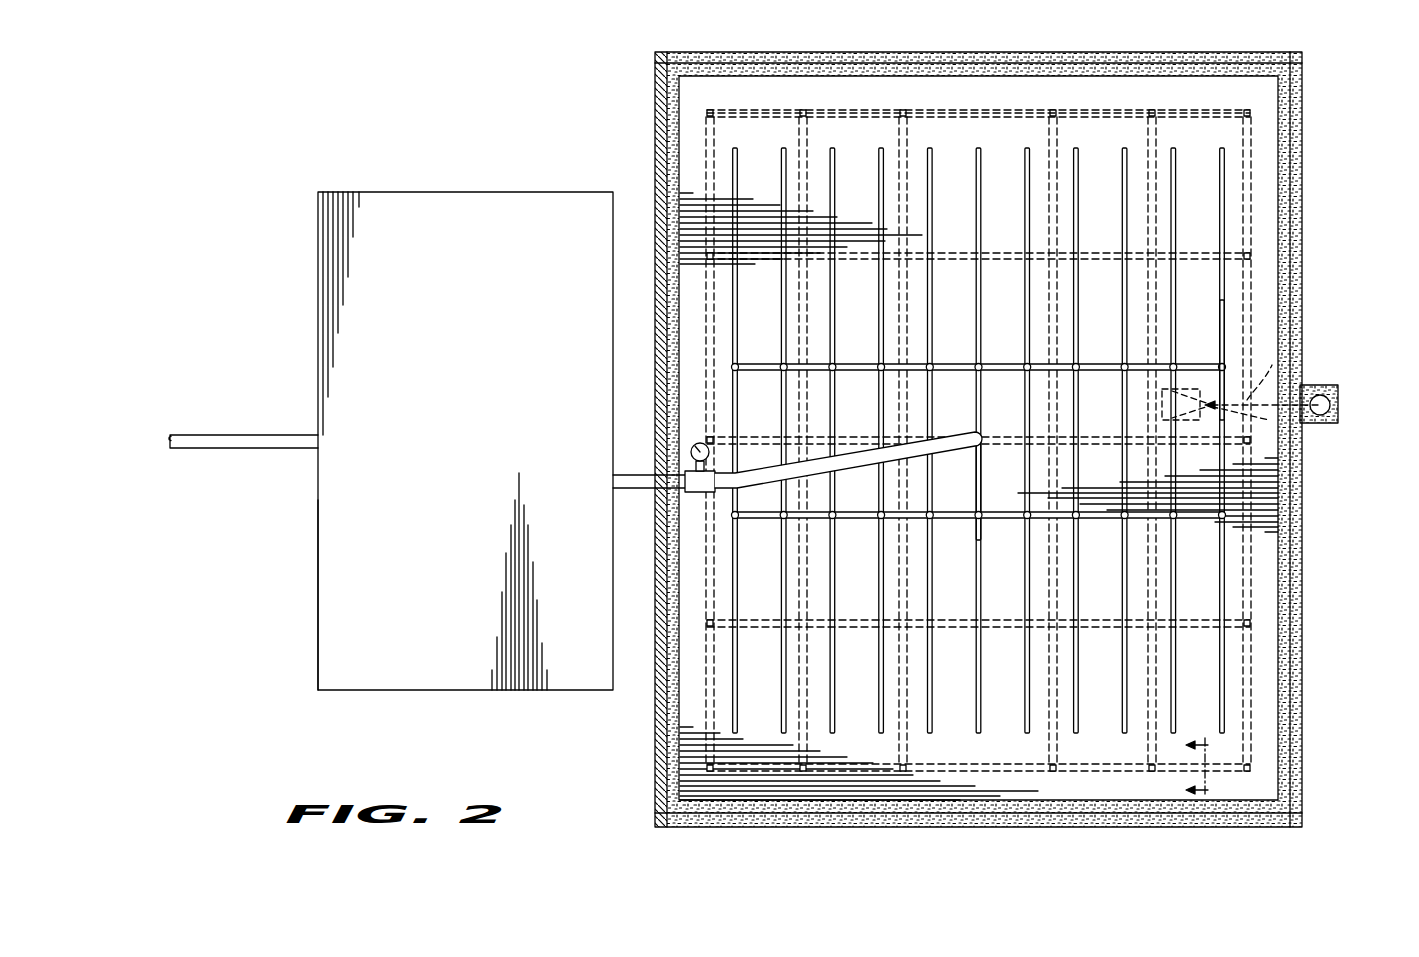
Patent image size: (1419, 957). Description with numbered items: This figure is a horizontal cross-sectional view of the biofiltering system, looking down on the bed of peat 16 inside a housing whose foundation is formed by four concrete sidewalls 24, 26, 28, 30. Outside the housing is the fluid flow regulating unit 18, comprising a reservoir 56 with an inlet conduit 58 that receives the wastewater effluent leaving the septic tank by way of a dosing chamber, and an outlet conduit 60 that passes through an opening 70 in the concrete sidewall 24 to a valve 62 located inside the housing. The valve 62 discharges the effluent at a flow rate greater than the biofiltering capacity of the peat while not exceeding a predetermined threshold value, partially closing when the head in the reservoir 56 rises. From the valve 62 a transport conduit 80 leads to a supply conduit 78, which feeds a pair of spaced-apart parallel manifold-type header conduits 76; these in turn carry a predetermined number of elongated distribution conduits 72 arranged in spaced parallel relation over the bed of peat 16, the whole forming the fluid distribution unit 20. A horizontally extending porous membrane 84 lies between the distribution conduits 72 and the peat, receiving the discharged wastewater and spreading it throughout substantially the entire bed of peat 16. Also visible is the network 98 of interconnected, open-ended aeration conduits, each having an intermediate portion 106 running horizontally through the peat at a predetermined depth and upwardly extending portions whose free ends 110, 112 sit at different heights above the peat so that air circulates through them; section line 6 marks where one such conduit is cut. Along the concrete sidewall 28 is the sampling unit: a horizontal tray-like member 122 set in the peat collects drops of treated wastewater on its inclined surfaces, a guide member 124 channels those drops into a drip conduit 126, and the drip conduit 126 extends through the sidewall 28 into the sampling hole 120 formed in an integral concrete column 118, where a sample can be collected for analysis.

The bed of peat 16 is at (982, 440).
The fluid flow regulating unit 18 is at (455, 165).
The fluid distribution unit 20 is at (1244, 340).
The concrete sidewall 24 is at (660, 751).
The concrete sidewall 26 is at (968, 63).
The concrete sidewall 28 is at (1298, 271).
The concrete sidewall 30 is at (866, 827).
The reservoir 56 is at (390, 532).
The inlet conduit 58 is at (262, 437).
The outlet conduit 60 is at (630, 474).
The valve 62 is at (700, 492).
The opening 70 is at (663, 485).
The distribution conduits 72 is at (1123, 224).
The header conduits 76 is at (853, 354).
The supply conduit 78 is at (982, 476).
The transport conduit 80 is at (862, 468).
The porous membrane 84 is at (757, 88).
The network of aeration conduits 98 is at (1030, 93).
The intermediate portion 106 is at (707, 165).
The free end 110 is at (706, 110).
The free end 112 is at (1252, 257).
The column 118 is at (1330, 390).
The sampling hole 120 is at (1330, 405).
The tray-like member 122 is at (1187, 388).
The guide member 124 is at (1270, 420).
The drip conduit 126 is at (1272, 365).
The section line 6 is at (1207, 769).